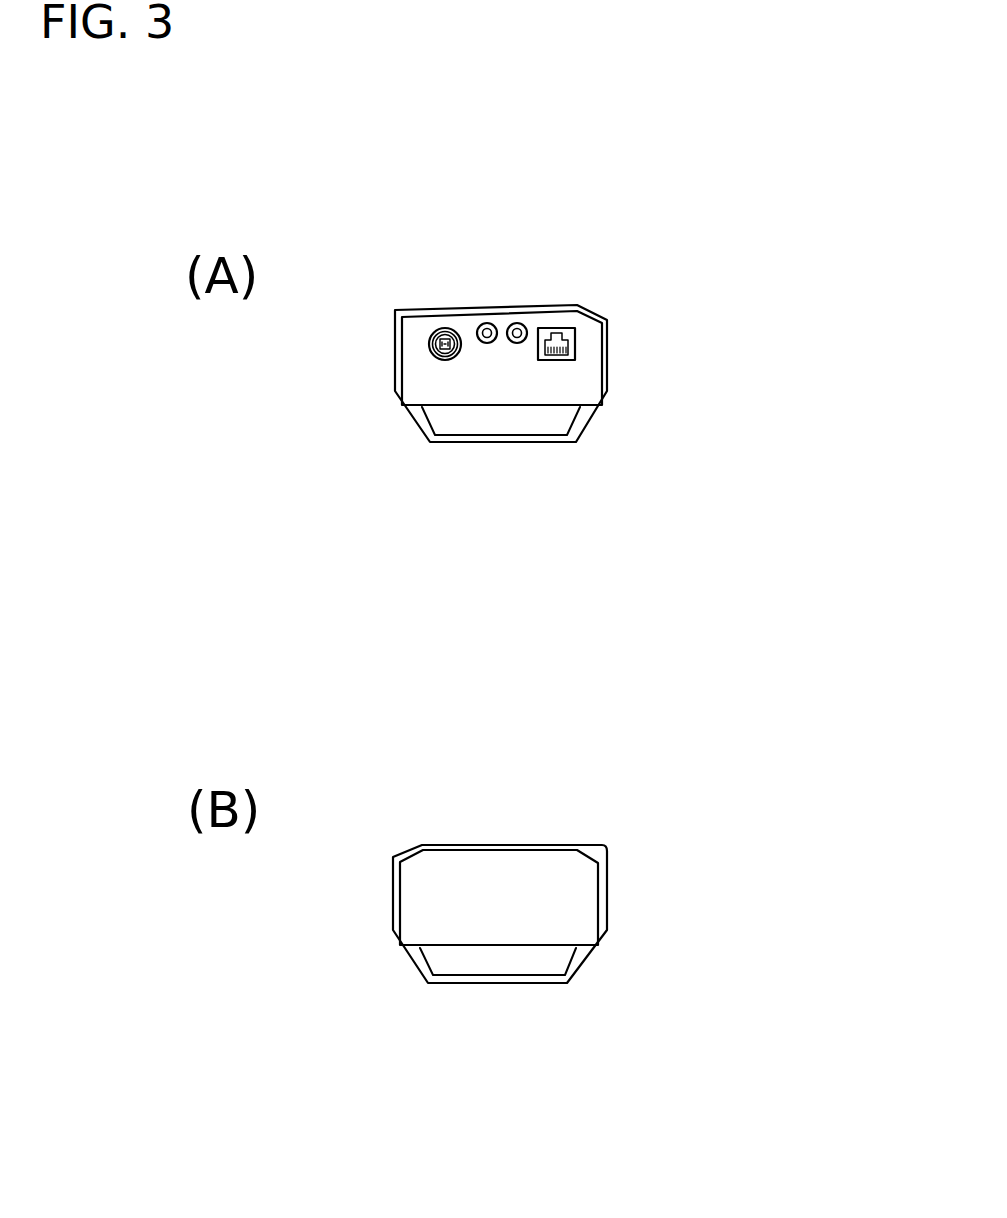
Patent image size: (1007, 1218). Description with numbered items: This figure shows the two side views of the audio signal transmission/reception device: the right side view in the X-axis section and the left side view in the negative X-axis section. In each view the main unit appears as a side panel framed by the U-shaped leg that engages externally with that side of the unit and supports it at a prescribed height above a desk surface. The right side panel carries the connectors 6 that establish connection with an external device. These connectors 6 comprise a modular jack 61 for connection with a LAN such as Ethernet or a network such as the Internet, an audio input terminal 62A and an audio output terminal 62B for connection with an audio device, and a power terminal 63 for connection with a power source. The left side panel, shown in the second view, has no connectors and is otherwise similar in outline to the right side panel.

The connectors 6 is at (633, 196).
The modular jack 61 is at (567, 330).
The audio input terminal 62A is at (487, 323).
The audio output terminal 62B is at (517, 323).
The power terminal 63 is at (452, 330).